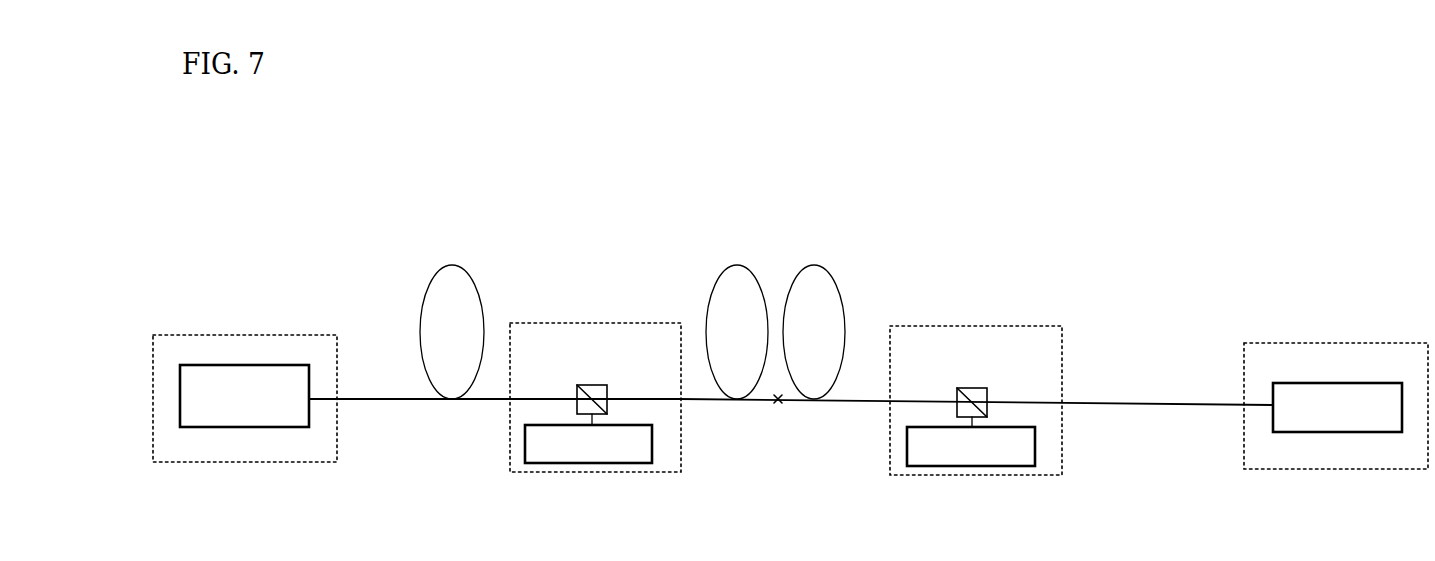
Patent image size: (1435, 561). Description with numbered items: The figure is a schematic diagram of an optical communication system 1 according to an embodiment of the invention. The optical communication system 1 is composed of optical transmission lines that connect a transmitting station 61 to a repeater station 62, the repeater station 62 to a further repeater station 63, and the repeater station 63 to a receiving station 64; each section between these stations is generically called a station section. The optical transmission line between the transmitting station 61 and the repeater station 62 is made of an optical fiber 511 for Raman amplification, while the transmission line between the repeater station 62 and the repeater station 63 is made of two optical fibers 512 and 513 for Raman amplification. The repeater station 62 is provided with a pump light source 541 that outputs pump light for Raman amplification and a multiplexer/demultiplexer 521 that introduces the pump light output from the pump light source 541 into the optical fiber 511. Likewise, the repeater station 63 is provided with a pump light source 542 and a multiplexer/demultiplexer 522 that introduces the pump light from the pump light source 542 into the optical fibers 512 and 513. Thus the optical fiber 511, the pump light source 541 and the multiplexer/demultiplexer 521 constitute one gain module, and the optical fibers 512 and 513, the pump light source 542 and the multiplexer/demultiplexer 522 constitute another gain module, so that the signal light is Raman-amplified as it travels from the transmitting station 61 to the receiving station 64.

The optical communication system 1 is at (1003, 237).
The transmitting station 61 is at (266, 335).
The repeater station 62 is at (623, 323).
The repeater station 63 is at (988, 326).
The receiving station 64 is at (1347, 343).
The optical fiber for Raman amplification 511 is at (452, 265).
The optical fiber for Raman amplification 512 is at (738, 266).
The optical fiber for Raman amplification 513 is at (815, 266).
The multiplexer/demultiplexer 521 is at (592, 385).
The multiplexer/demultiplexer 522 is at (975, 388).
The pump light source 541 is at (652, 445).
The pump light source 542 is at (1035, 447).